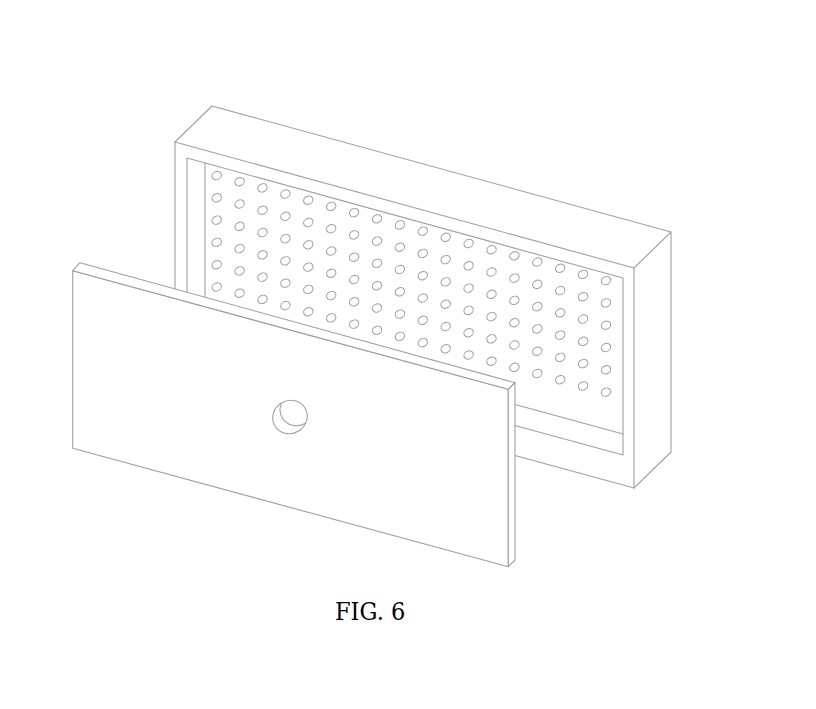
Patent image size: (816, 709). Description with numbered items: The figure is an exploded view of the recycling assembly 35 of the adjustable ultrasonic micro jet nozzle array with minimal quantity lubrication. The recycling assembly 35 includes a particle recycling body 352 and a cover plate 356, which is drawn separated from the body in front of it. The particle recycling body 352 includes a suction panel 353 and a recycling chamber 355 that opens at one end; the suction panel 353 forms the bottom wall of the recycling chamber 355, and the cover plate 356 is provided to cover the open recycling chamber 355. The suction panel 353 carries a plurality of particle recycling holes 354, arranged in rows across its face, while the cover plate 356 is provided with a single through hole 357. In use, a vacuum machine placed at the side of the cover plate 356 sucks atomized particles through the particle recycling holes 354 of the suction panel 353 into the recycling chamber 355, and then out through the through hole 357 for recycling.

The recycling assembly 35 is at (473, 115).
The particle recycling body 352 is at (270, 153).
The suction panel 353 is at (505, 266).
The particle recycling holes 354 is at (355, 255).
The recycling chamber 355 is at (227, 210).
The cover plate 356 is at (205, 415).
The through hole 357 is at (299, 420).